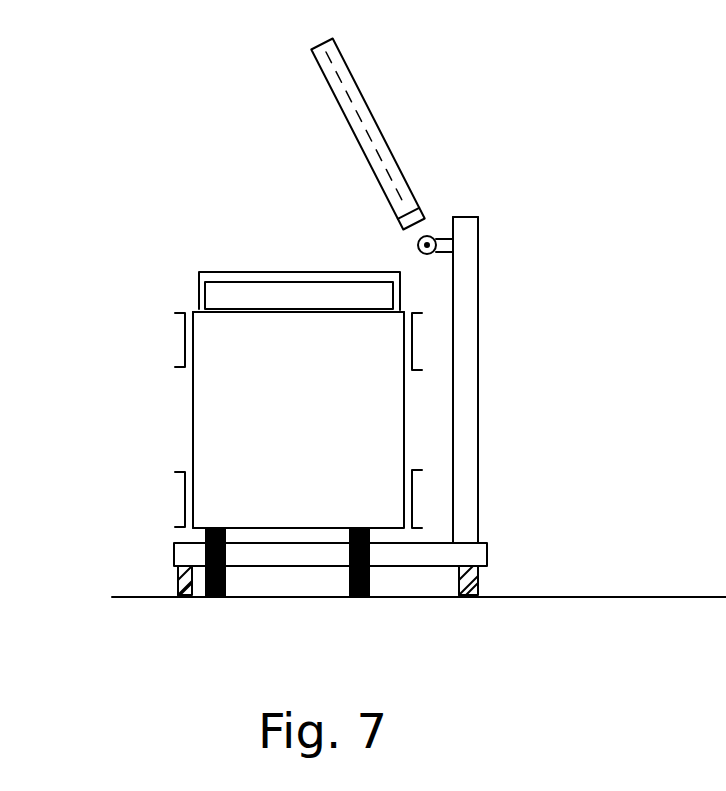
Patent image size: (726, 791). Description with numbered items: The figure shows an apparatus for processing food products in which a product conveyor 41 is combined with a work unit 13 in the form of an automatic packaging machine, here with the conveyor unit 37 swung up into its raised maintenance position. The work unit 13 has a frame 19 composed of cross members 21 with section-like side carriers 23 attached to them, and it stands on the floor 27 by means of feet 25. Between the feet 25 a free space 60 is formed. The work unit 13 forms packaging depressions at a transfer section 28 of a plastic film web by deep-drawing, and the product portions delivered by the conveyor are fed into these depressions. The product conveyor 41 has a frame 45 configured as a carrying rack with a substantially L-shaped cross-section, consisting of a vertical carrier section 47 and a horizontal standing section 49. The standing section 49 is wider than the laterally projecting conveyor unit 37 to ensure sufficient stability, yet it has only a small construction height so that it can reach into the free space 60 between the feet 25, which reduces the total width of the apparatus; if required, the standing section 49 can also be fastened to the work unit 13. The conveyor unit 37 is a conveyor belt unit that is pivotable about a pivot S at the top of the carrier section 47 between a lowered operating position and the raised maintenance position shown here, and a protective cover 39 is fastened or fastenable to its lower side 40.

The work unit 13 is at (99, 360).
The frame 19 is at (171, 447).
The cross members 21 is at (210, 392).
The side carriers 23 is at (183, 497).
The feet 25 is at (225, 577).
The floor 27 is at (625, 585).
The transfer section 28 is at (222, 297).
The conveyor unit 37 is at (404, 118).
The protective cover 39 is at (218, 261).
The lower side 40 is at (368, 197).
The product conveyor 41 is at (565, 240).
The frame 45 is at (512, 429).
The vertical carrier section 47 is at (463, 471).
The standing section 49 is at (438, 586).
The free space 60 is at (300, 580).
The pivot joint S is at (442, 228).